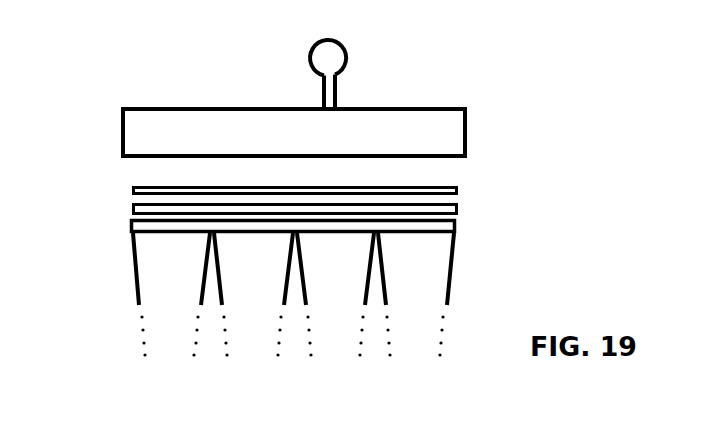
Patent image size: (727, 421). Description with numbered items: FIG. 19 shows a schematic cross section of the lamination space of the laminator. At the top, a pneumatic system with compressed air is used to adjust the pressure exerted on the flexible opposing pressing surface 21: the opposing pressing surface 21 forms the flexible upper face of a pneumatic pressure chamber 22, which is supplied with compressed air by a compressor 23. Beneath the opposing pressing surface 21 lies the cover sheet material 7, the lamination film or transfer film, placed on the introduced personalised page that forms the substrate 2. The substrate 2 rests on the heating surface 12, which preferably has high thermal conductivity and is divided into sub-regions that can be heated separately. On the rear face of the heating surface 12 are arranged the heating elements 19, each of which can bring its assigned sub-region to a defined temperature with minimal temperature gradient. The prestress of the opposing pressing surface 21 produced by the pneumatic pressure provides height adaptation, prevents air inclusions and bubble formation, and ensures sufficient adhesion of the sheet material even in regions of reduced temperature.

The opposing pressing surface 21 is at (351, 86).
The pneumatic pressure chamber 22 is at (257, 135).
The compressor 23 is at (338, 57).
The cover sheet material 7 is at (132, 191).
The substrate 2 is at (131, 209).
The heating surface 12 is at (456, 226).
The heating elements 19 is at (430, 276).